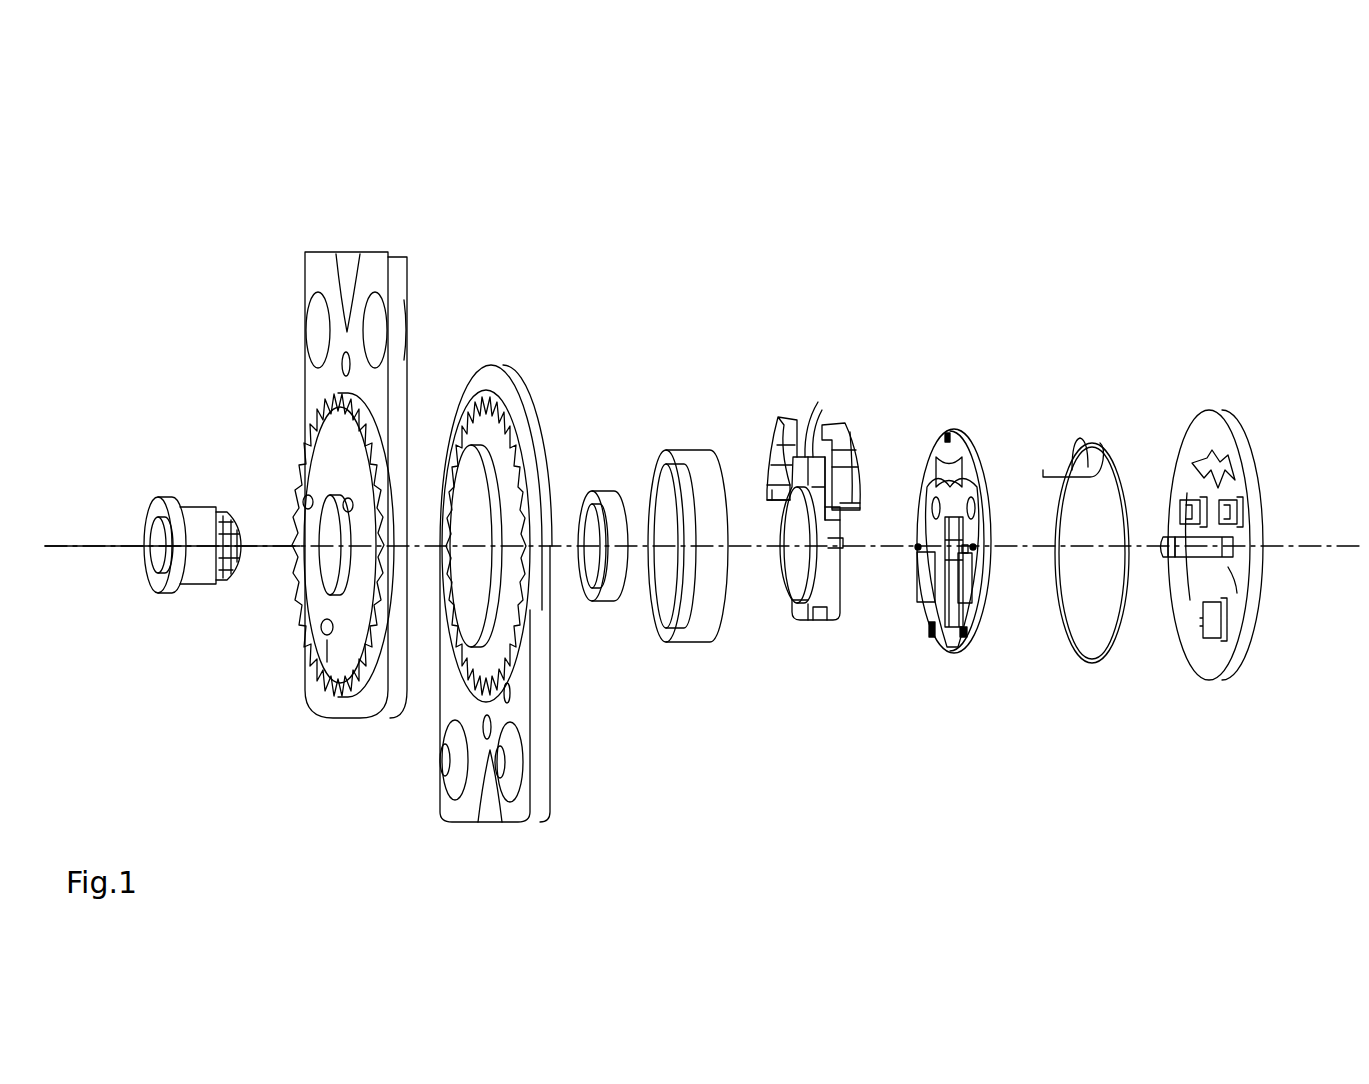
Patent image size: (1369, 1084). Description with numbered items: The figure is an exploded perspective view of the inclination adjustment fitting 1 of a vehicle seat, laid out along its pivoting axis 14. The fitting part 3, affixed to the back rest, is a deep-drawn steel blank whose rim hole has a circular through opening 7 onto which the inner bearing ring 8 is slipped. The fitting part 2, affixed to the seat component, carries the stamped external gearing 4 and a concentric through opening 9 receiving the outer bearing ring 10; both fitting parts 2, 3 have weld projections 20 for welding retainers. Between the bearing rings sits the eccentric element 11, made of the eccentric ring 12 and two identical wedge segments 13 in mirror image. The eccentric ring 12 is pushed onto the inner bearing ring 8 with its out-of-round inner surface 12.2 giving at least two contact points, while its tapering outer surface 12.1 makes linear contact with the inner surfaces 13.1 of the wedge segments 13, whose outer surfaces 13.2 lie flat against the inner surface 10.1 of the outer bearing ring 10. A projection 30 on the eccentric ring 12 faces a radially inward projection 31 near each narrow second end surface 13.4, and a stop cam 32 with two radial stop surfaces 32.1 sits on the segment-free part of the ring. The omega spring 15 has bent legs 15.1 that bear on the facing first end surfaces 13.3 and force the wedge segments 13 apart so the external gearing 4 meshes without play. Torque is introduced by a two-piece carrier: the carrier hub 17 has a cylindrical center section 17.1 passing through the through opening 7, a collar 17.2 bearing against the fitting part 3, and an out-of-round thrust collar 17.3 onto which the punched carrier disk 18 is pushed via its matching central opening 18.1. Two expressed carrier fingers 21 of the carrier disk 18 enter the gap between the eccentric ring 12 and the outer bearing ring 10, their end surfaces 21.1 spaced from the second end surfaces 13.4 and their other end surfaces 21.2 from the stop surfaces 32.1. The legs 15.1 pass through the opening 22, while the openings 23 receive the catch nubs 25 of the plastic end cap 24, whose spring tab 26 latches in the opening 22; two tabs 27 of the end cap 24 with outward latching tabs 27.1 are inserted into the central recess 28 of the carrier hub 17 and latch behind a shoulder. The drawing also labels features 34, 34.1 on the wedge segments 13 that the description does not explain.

The inclination adjustment fitting 1 is at (952, 149).
The fitting part 2 is at (507, 584).
The fitting part 3 is at (316, 258).
The external gearing 4 is at (520, 455).
The through opening 7 is at (335, 565).
The inner bearing ring 8 is at (610, 596).
The through opening 9 is at (482, 498).
The outer bearing ring 10 is at (681, 567).
The inner surface 10.1 is at (674, 606).
The eccentric element 11 is at (793, 477).
The eccentric ring 12 is at (828, 562).
The outer surface 12.1 is at (838, 516).
The inner surface 12.2 is at (797, 563).
The wedge segment 13 is at (793, 459).
The inner surface 13.1 is at (786, 452).
The outer surface 13.2 is at (850, 467).
The first end surface 13.3 is at (812, 424).
The second end surface 13.4 is at (776, 506).
The pivoting axis 14 is at (258, 545).
The omega spring 15 is at (1086, 549).
The legs 15.1 is at (1053, 468).
The carrier hub 17 is at (178, 530).
The cylindrical center section 17.1 is at (195, 515).
The collar 17.2 is at (169, 595).
The thrust collar 17.3 is at (227, 582).
The carrier disk 18 is at (956, 519).
The central opening 18.1 is at (914, 549).
The weld projections 20 is at (320, 326).
The carrier fingers 21 is at (918, 576).
The end surfaces 21.1 is at (970, 549).
The end surfaces 21.2 is at (928, 620).
The opening 22 is at (950, 462).
The openings 23 is at (974, 510).
The end cap 24 is at (1212, 506).
The catch nubs 25 is at (1185, 500).
The spring tab 26 is at (1214, 470).
The tabs 27 is at (1178, 564).
The latching tabs 27.1 is at (1170, 540).
The central recess 28 is at (152, 558).
The projection 30 is at (840, 543).
The projection 31 is at (774, 492).
The stop cam 32 is at (800, 618).
The stop surfaces 32.1 is at (824, 612).
The wedge segment surface 34 is at (790, 452).
The wedge segment surface 34.1 is at (858, 452).